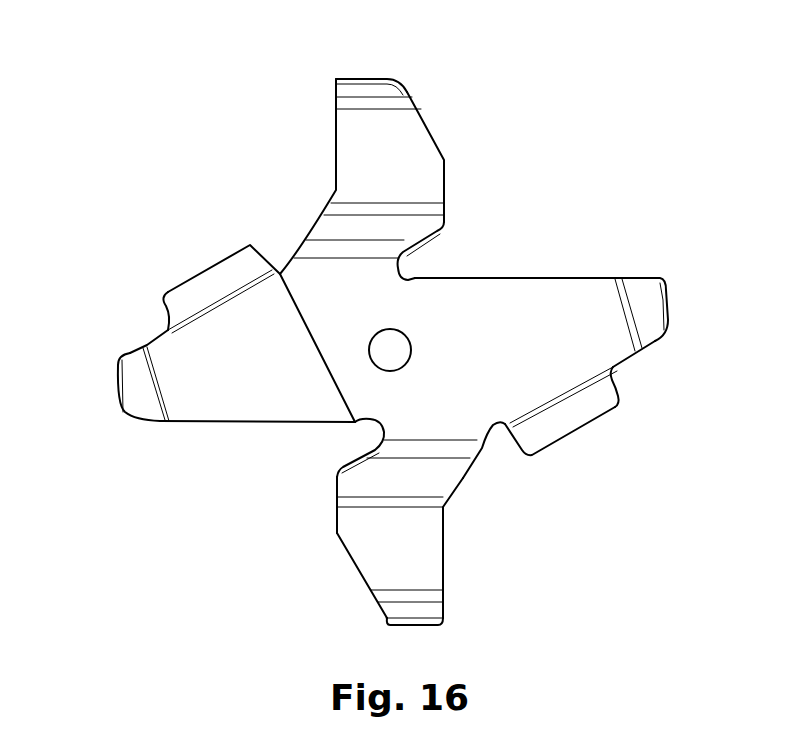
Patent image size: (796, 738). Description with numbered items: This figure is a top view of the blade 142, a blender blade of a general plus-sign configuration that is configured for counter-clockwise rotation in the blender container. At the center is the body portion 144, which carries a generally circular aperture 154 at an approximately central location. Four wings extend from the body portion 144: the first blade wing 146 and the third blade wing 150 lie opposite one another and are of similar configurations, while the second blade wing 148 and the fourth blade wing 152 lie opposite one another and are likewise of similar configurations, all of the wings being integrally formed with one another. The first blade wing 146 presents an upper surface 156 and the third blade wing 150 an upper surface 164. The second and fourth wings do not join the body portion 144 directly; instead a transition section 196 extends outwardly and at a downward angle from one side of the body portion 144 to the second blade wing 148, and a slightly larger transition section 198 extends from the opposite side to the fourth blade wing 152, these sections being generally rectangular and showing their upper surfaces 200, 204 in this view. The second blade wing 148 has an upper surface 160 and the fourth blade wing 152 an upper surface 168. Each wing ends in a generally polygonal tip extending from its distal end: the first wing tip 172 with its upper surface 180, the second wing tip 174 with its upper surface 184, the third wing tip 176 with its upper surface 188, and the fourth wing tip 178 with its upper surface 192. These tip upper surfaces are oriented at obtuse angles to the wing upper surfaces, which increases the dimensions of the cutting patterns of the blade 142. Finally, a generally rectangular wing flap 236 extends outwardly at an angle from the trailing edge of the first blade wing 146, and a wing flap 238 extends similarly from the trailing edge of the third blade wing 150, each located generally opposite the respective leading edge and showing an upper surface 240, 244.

The blade 142 is at (121, 141).
The body portion 144 is at (423, 321).
The first blade wing 146 is at (545, 291).
The second blade wing 148 is at (346, 147).
The third blade wing 150 is at (202, 417).
The fourth blade wing 152 is at (437, 551).
The aperture 154 is at (380, 353).
The upper surface 156 is at (580, 312).
The upper surface 160 is at (410, 150).
The upper surface 164 is at (257, 390).
The upper surface 168 is at (370, 562).
The first wing tip 172 is at (662, 312).
The second wing tip 174 is at (373, 69).
The third wing tip 176 is at (113, 392).
The fourth wing tip 178 is at (421, 621).
The upper surface 180 is at (640, 292).
The upper surface 184 is at (352, 85).
The upper surface 188 is at (133, 370).
The upper surface 192 is at (397, 612).
The transition section 196 is at (324, 226).
The transition section 198 is at (447, 479).
The upper surface 200 is at (403, 227).
The upper surface 204 is at (358, 483).
The wing flap 236 is at (604, 415).
The wing flap 238 is at (217, 262).
The upper surface 240 is at (555, 423).
The upper surface 244 is at (180, 300).